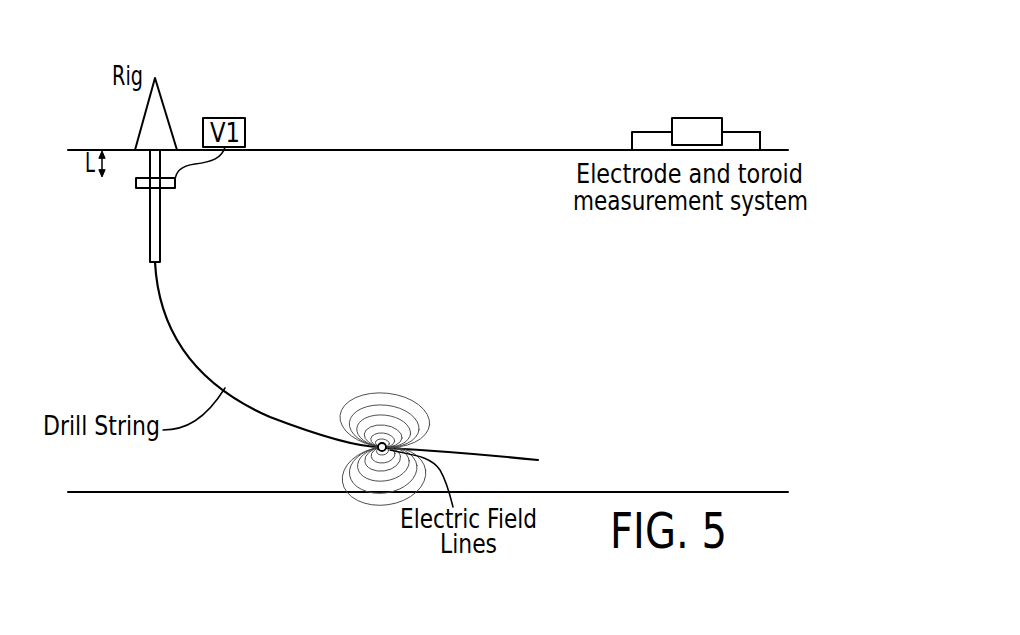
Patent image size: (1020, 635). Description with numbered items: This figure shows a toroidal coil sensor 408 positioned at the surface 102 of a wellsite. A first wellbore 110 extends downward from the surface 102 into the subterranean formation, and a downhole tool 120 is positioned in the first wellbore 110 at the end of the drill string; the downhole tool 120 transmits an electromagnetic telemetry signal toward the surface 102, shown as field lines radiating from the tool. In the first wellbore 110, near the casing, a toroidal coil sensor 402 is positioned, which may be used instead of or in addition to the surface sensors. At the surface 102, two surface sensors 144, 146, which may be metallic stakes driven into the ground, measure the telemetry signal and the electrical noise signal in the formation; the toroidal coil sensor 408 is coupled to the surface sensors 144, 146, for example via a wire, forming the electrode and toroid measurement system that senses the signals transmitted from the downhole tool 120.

The surface 102 is at (778, 150).
The first wellbore 110 is at (117, 220).
The downhole tool 120 is at (382, 451).
The surface sensor 144 is at (761, 150).
The surface sensor 146 is at (632, 150).
The toroidal coil sensor 402 is at (147, 178).
The toroidal coil sensor 408 is at (690, 118).